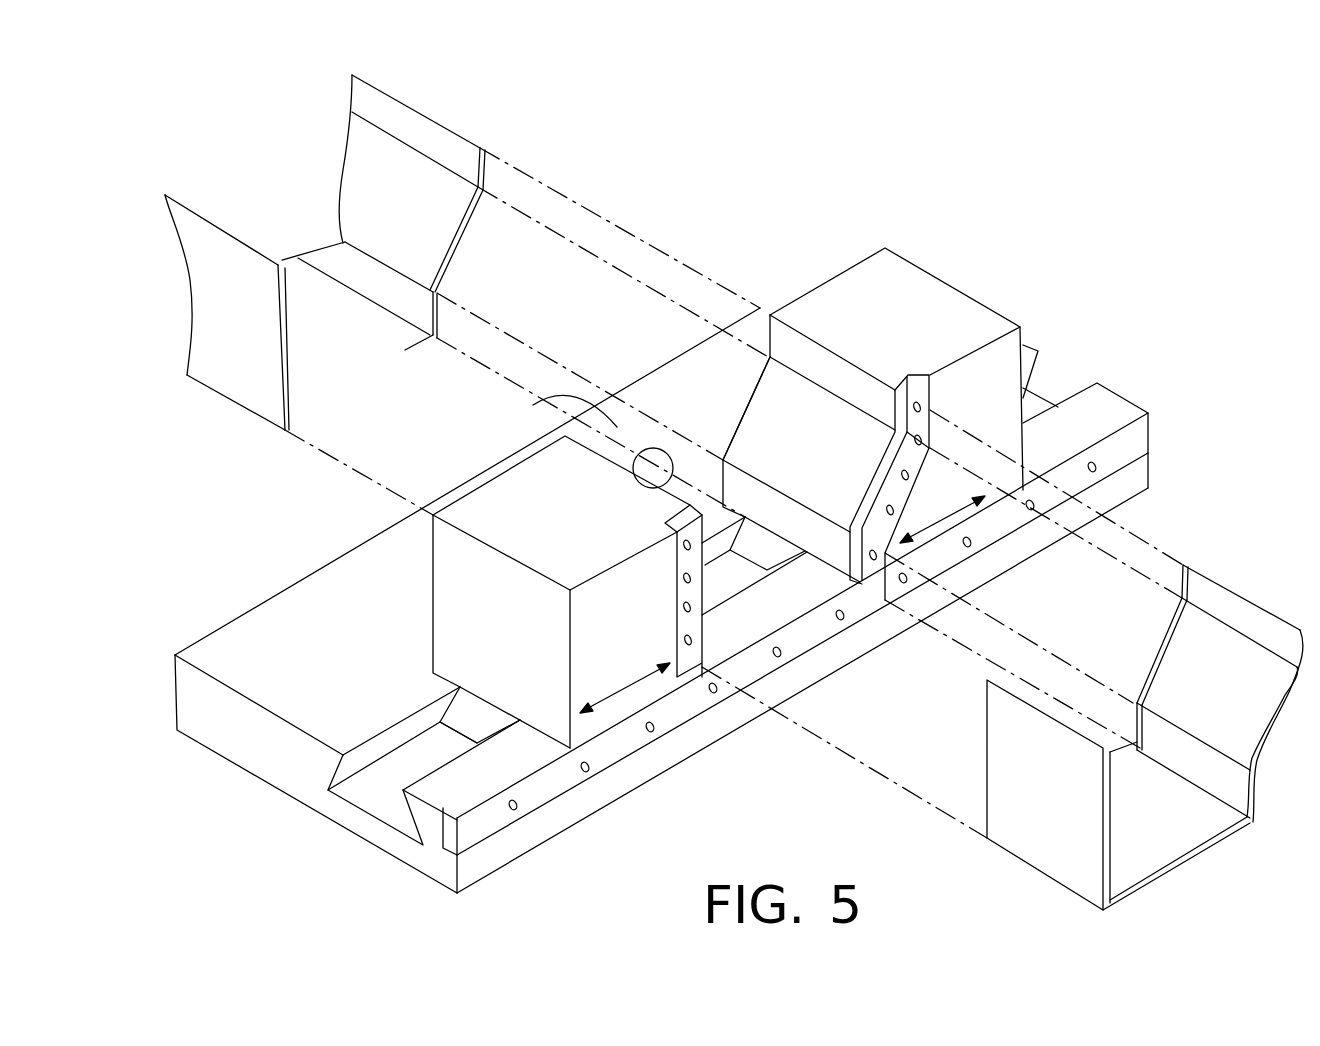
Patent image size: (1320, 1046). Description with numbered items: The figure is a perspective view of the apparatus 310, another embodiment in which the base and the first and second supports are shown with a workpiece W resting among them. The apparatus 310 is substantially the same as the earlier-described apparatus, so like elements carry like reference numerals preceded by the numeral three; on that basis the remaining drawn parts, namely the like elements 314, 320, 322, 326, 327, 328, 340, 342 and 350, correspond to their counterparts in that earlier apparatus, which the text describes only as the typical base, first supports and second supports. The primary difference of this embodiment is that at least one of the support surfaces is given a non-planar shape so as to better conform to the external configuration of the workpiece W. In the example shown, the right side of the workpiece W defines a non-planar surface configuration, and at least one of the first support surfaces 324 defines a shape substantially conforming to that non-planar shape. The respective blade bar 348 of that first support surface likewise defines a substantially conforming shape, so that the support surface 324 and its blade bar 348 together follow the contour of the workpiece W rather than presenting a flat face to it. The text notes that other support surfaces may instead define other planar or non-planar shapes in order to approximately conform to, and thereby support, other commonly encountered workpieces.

The workpiece W is at (417, 111).
The apparatus 310 is at (745, 280).
The base 314 is at (222, 727).
The second die block 320 is at (923, 293).
The first die block 322 is at (497, 517).
The first support surface 324 is at (823, 425).
The roller 326 is at (648, 458).
The guide 327 is at (562, 400).
The gap 328 is at (680, 423).
The dovetail groove 340 is at (377, 800).
The key 342 is at (473, 707).
The blade bar 348 is at (683, 567).
The rail 350 is at (703, 628).